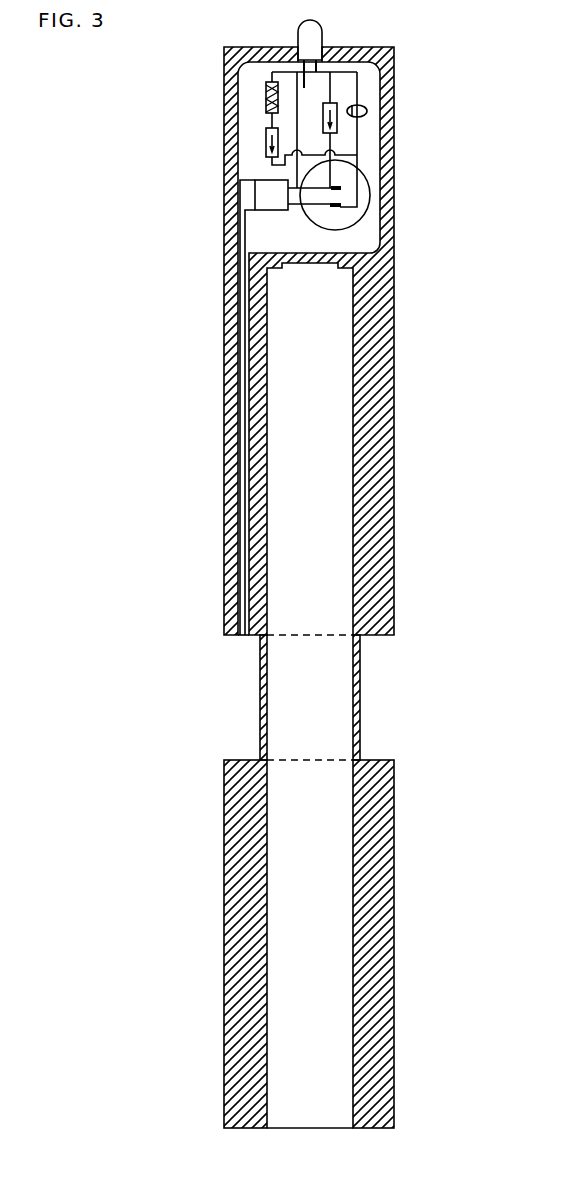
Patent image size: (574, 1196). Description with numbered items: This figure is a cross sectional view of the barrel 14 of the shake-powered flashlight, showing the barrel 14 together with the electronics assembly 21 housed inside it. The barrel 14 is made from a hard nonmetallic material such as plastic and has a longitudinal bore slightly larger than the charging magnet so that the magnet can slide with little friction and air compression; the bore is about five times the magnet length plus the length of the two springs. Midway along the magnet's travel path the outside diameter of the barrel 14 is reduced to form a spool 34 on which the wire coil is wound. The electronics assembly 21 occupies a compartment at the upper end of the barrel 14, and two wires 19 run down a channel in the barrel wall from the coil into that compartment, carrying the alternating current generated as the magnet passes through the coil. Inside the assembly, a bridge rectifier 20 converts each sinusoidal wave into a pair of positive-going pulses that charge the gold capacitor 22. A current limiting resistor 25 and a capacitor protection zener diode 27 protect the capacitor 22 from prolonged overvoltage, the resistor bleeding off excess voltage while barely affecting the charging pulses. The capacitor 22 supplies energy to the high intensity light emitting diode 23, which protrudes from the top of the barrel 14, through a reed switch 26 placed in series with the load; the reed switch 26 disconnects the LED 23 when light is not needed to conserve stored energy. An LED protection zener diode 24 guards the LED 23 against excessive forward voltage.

The barrel 14 is at (246, 1064).
The wires 19 is at (245, 556).
The bridge rectifier 20 is at (248, 197).
The electronics assembly 21 is at (372, 232).
The gold capacitor 22 is at (371, 195).
The high intensity light emitting diode 23 is at (330, 31).
The LED protection zener diode 24 is at (315, 122).
The current limiting resistor 25 is at (258, 100).
The reed switch 26 is at (374, 113).
The capacitor protection zener diode 27 is at (258, 143).
The spool 34 is at (254, 693).